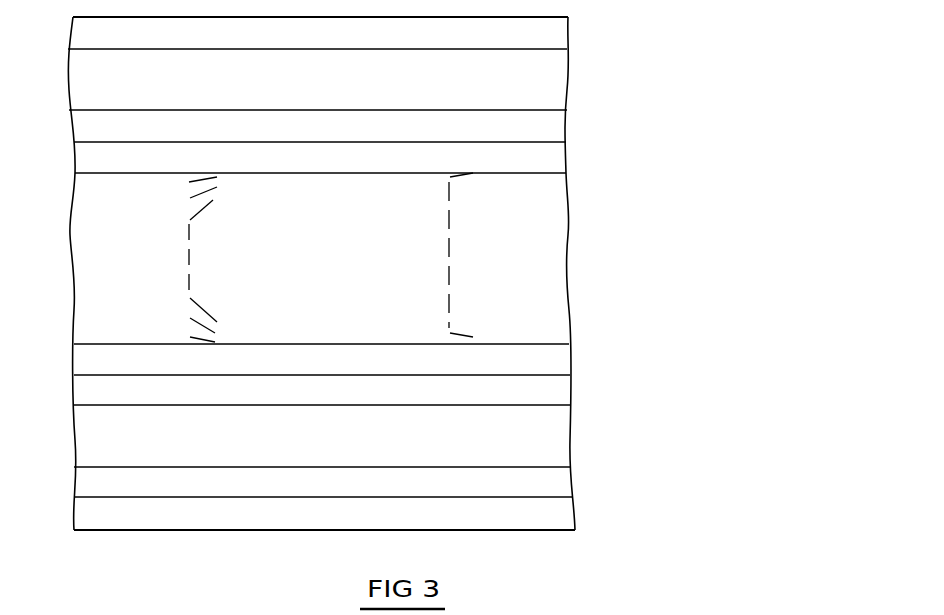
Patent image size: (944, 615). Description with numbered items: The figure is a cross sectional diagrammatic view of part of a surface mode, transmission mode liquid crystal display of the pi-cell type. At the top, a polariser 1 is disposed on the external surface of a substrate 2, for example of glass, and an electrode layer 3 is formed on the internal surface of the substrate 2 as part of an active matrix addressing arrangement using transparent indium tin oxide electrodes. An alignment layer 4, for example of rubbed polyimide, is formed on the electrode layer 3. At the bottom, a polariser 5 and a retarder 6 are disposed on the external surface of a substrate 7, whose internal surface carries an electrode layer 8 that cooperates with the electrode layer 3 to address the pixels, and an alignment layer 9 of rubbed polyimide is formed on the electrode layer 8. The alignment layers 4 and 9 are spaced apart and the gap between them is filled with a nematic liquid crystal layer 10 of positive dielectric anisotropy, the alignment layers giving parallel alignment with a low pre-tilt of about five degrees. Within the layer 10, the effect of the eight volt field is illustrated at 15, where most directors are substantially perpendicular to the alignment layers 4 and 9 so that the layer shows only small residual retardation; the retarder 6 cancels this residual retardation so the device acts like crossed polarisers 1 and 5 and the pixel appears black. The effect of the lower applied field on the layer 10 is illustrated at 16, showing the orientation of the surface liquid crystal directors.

The polariser 1 is at (545, 31).
The substrate 2 is at (545, 77).
The electrode layer 3 is at (545, 124).
The alignment layer 4 is at (545, 156).
The polariser 5 is at (546, 510).
The retarder 6 is at (546, 478).
The substrate 7 is at (546, 433).
The electrode layer 8 is at (546, 388).
The alignment layer 9 is at (546, 358).
The nematic liquid crystal layer 10 is at (517, 237).
The effect of the 8 volt field 15 is at (457, 273).
The effect of the lower applied field 16 is at (203, 268).